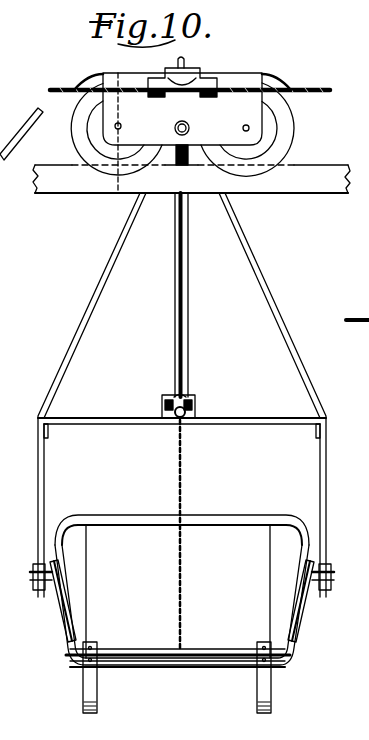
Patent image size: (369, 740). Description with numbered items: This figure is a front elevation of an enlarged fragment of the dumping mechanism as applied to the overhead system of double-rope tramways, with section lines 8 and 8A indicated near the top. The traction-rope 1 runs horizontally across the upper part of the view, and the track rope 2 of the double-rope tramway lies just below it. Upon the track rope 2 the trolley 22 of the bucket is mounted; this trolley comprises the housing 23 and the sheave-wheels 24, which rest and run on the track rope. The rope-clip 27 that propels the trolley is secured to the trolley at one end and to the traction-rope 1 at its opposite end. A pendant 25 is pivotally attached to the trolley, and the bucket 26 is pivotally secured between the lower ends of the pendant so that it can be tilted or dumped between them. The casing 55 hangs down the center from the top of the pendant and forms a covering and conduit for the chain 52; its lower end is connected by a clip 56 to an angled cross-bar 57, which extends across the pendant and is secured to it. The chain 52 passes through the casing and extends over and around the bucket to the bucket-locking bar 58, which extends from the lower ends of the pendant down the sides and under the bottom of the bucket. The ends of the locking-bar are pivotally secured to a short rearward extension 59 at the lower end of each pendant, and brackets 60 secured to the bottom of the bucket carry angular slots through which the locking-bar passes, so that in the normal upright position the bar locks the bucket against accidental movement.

The traction-rope 1 is at (323, 88).
The track rope 2 is at (305, 191).
The section line 8 is at (118, 193).
The section line 8A is at (205, 63).
The trolley 22 is at (134, 76).
The housing 23 is at (183, 120).
The sheave-wheels 24 is at (76, 148).
The pendant 25 is at (123, 245).
The bucket 26 is at (182, 591).
The rope-clip 27 is at (186, 69).
The chain 52 is at (183, 482).
The casing 55 is at (188, 344).
The clip 56 is at (192, 396).
The angled cross-bar 57 is at (152, 422).
The bucket-locking bar 58 is at (55, 630).
The rearward extension 59 is at (31, 572).
The brackets 60 is at (97, 690).